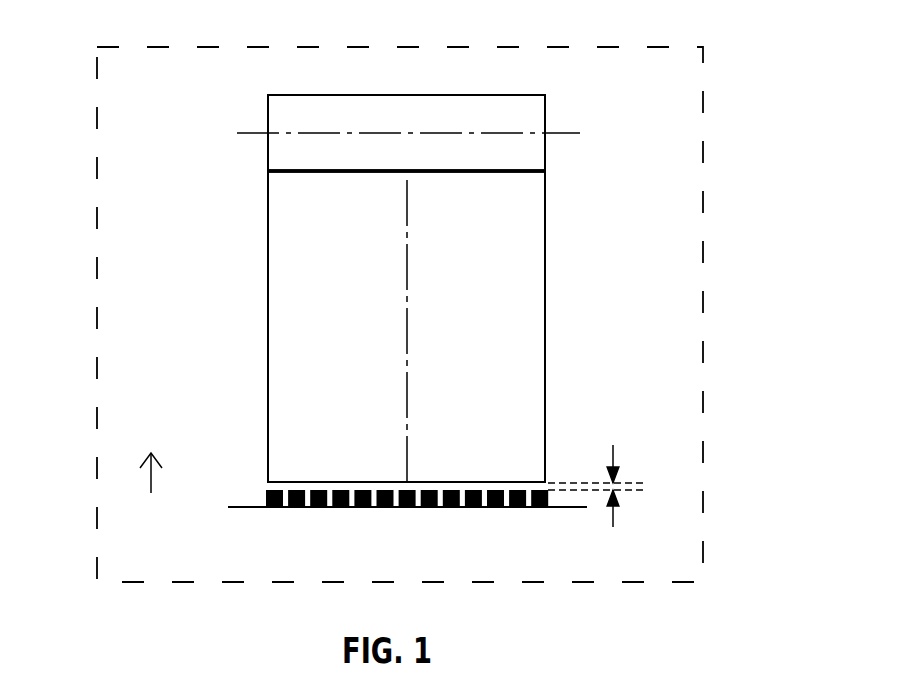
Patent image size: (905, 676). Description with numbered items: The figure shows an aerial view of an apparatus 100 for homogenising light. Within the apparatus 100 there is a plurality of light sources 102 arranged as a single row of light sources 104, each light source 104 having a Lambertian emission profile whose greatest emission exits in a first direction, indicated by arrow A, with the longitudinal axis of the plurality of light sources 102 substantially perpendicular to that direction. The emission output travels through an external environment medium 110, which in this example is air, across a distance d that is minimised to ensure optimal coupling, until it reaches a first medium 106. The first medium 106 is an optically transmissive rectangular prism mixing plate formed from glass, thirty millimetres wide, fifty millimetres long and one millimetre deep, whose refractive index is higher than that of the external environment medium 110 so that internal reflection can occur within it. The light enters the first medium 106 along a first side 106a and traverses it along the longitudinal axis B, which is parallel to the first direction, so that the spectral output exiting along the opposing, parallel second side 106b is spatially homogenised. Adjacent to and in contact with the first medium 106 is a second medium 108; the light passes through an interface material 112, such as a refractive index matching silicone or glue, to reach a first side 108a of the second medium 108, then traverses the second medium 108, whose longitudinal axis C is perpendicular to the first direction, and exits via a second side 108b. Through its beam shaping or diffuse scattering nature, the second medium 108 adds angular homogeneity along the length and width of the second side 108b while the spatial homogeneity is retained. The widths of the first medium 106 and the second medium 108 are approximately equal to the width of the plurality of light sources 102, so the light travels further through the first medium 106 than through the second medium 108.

The apparatus 100 is at (160, 24).
The plurality of light sources 102 is at (236, 480).
The light source 104 is at (492, 507).
The first medium 106 is at (268, 247).
The first side of the first medium 106a is at (510, 483).
The second side of the first medium 106b is at (513, 171).
The second medium 108 is at (268, 115).
The first side of the second medium 108a is at (513, 171).
The second side of the second medium 108b is at (517, 95).
The external environment medium 110 is at (672, 340).
The interface material 112 is at (268, 172).